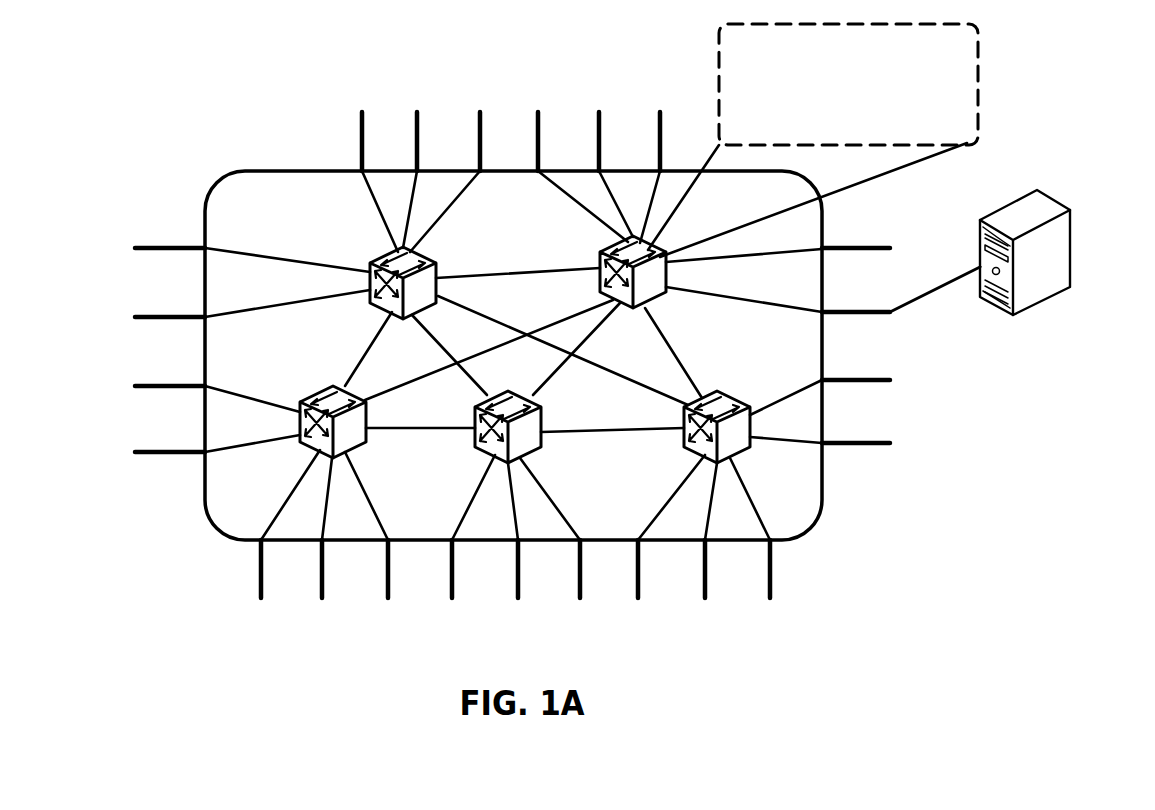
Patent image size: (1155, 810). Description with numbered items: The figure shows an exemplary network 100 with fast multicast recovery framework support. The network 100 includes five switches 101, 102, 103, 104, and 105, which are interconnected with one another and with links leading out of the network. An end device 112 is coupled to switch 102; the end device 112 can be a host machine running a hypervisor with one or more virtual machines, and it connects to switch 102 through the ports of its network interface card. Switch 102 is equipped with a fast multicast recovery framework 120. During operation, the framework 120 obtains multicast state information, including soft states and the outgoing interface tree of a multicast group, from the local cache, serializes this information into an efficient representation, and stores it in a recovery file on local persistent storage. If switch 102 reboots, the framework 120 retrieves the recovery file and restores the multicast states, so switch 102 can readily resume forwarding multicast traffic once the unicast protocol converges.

The network 100 is at (821, 494).
The switch 101 is at (380, 308).
The switch 102 is at (667, 293).
The switch 103 is at (308, 450).
The switch 104 is at (547, 447).
The switch 105 is at (752, 446).
The end device 112 is at (1047, 193).
The fast multicast recovery framework 120 is at (848, 84).